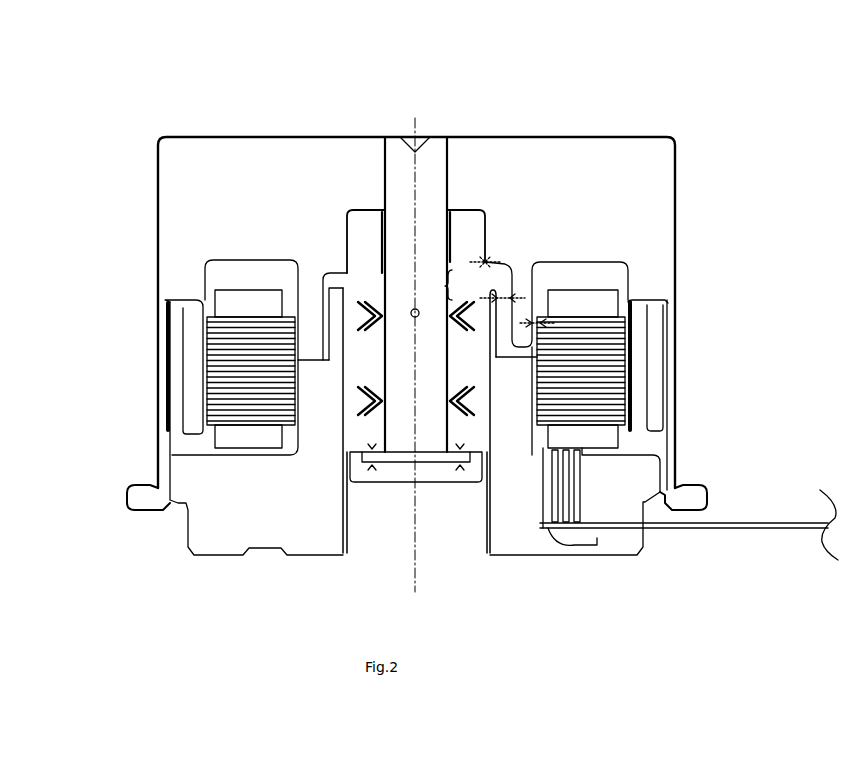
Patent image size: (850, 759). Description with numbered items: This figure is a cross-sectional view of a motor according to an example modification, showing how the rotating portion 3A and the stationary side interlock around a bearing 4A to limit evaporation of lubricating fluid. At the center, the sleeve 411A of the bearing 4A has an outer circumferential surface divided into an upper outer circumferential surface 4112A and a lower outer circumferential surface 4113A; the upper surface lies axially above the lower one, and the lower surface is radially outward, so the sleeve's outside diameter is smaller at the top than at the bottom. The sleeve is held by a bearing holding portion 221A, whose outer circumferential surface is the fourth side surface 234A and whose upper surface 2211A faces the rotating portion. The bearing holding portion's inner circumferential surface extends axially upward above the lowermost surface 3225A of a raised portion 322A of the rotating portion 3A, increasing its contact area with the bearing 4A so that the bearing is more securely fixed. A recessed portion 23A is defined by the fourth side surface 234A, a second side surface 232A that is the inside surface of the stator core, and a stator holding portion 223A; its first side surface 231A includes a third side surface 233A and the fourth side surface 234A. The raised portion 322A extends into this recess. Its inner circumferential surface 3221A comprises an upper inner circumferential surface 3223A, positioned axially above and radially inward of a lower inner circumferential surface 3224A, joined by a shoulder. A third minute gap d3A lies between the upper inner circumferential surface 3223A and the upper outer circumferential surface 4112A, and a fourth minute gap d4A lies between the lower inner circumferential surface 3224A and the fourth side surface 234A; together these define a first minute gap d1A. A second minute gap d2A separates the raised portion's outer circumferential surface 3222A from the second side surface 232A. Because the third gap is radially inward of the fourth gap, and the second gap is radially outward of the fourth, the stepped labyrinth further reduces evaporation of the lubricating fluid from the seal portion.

The rotating portion 3A is at (598, 115).
The raised portion 322A is at (508, 242).
The inner circumferential surface 3221A is at (770, 196).
The upper inner circumferential surface 3223A is at (535, 293).
The lower inner circumferential surface 3224A is at (485, 258).
The outer circumferential surface 3222A is at (625, 352).
The lowermost surface 3225A is at (190, 304).
The upper surface 2211A is at (325, 278).
The recessed portion 23A is at (157, 357).
The second side surface 232A is at (207, 358).
The first side surface 231A is at (58, 370).
The fourth side surface 234A is at (207, 381).
The third side surface 233A is at (207, 408).
The sleeve 411A is at (299, 254).
The upper outer circumferential surface 4112A is at (332, 263).
The lower outer circumferential surface 4113A is at (320, 345).
The bearing holding portion 221A is at (337, 395).
The bearing 4A is at (382, 488).
The stator holding portion 223A is at (525, 390).
The first minute gap d1A is at (431, 293).
The second minute gap d2A is at (549, 313).
The third minute gap d3A is at (480, 269).
The fourth minute gap d4A is at (492, 293).